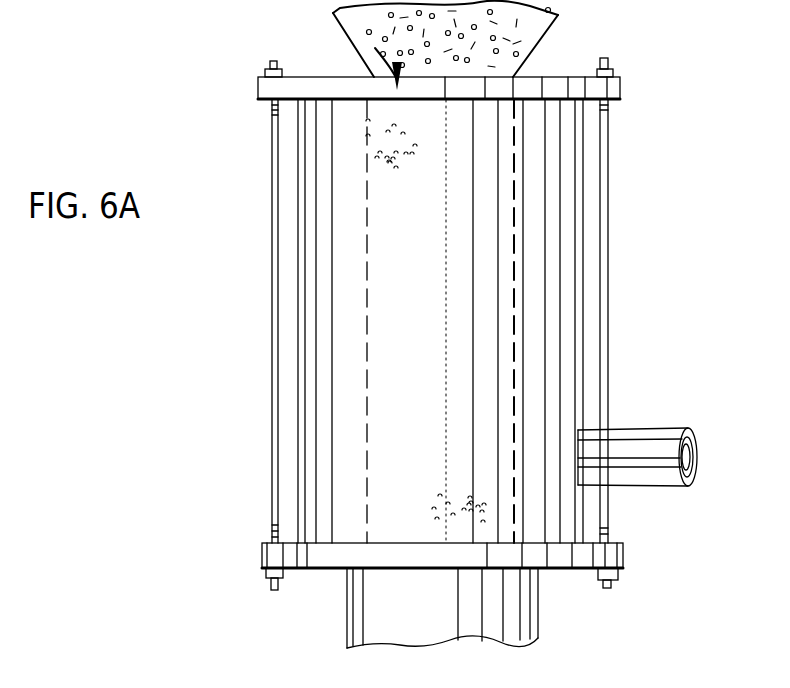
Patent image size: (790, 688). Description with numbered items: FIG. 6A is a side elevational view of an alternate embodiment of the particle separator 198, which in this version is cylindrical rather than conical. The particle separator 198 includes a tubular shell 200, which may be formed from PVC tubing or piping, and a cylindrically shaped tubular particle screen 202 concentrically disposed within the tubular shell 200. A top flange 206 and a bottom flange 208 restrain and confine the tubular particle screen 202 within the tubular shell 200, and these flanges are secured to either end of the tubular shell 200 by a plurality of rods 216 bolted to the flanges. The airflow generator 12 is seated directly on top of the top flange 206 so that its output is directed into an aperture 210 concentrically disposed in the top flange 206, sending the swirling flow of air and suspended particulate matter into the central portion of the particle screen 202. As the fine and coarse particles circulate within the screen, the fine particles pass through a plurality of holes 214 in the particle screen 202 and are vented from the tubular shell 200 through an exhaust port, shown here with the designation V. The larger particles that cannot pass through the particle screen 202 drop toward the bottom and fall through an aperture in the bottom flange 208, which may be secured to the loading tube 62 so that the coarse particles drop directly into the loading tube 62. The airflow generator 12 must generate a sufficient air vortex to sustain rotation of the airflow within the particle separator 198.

The particle separator 198 is at (218, 297).
The tubular shell 200 is at (583, 253).
The tubular particle screen 202 is at (497, 195).
The top flange 206 is at (258, 90).
The bottom flange 208 is at (262, 567).
The aperture 210 is at (397, 80).
The airflow generator 12 is at (518, 47).
The holes 214 is at (365, 130).
The rods 216 is at (270, 163).
The loading tube 62 is at (522, 614).
The vacuum port V is at (700, 451).